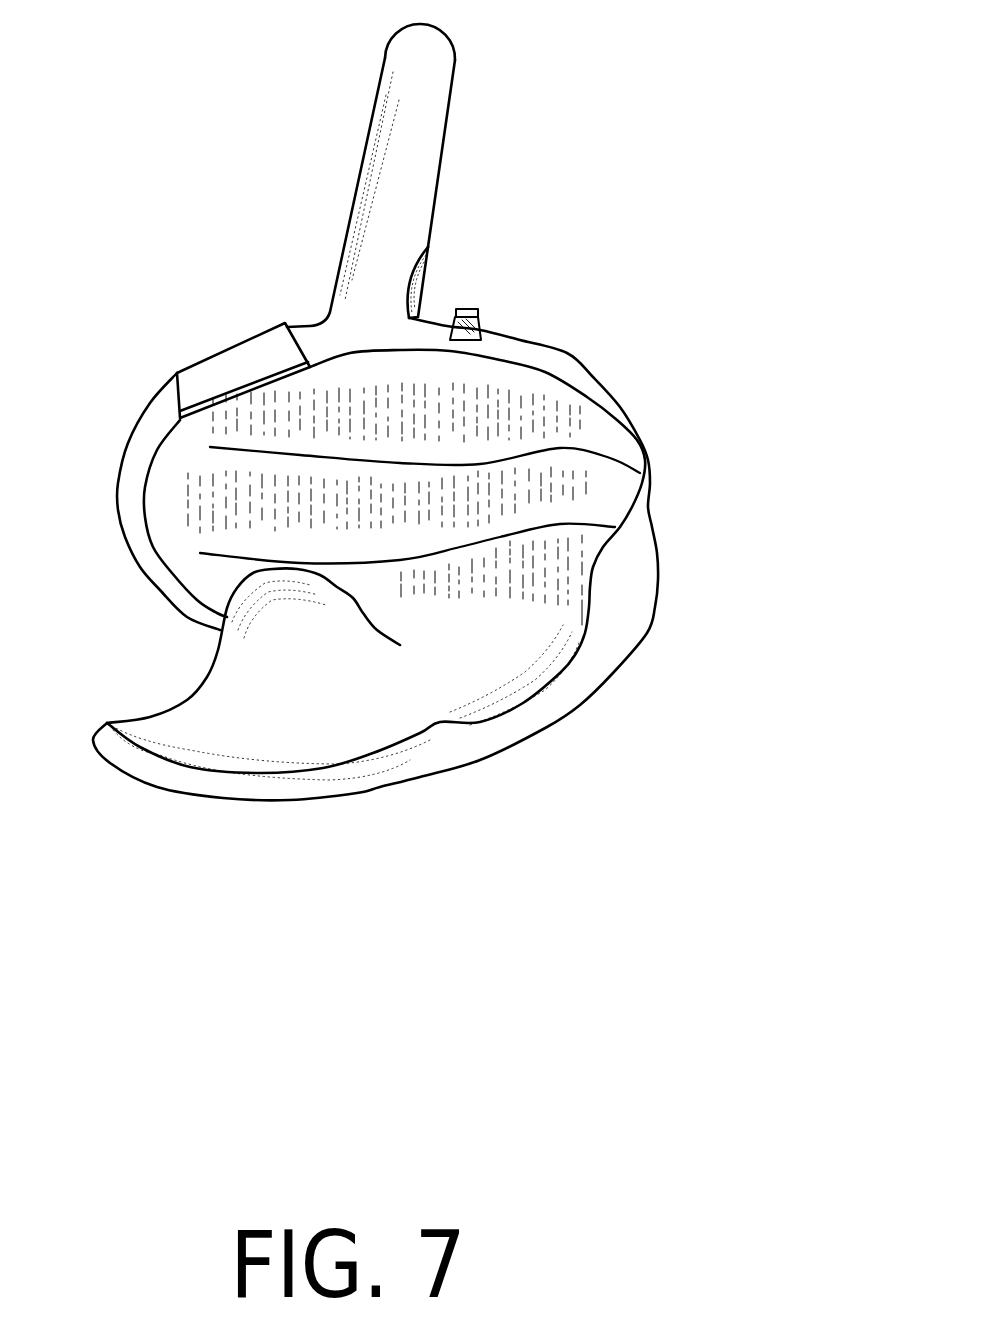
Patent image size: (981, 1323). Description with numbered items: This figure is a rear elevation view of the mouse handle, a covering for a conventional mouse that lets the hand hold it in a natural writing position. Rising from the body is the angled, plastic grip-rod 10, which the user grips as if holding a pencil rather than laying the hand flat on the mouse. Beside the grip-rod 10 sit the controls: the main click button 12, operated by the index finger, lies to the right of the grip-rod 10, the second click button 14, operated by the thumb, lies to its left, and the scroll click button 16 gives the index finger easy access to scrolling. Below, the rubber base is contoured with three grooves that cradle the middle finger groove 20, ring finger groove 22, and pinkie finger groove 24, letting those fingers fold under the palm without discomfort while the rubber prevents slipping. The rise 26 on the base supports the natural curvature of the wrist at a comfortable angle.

The grip-rod 10 is at (388, 82).
The main click button 12 is at (428, 268).
The 2nd click button 14 is at (243, 348).
The scroll click button 16 is at (470, 328).
The middle finger groove 20 is at (592, 437).
The ring finger groove 22 is at (598, 497).
The pinkie finger groove 24 is at (498, 573).
The rise 26 is at (270, 612).